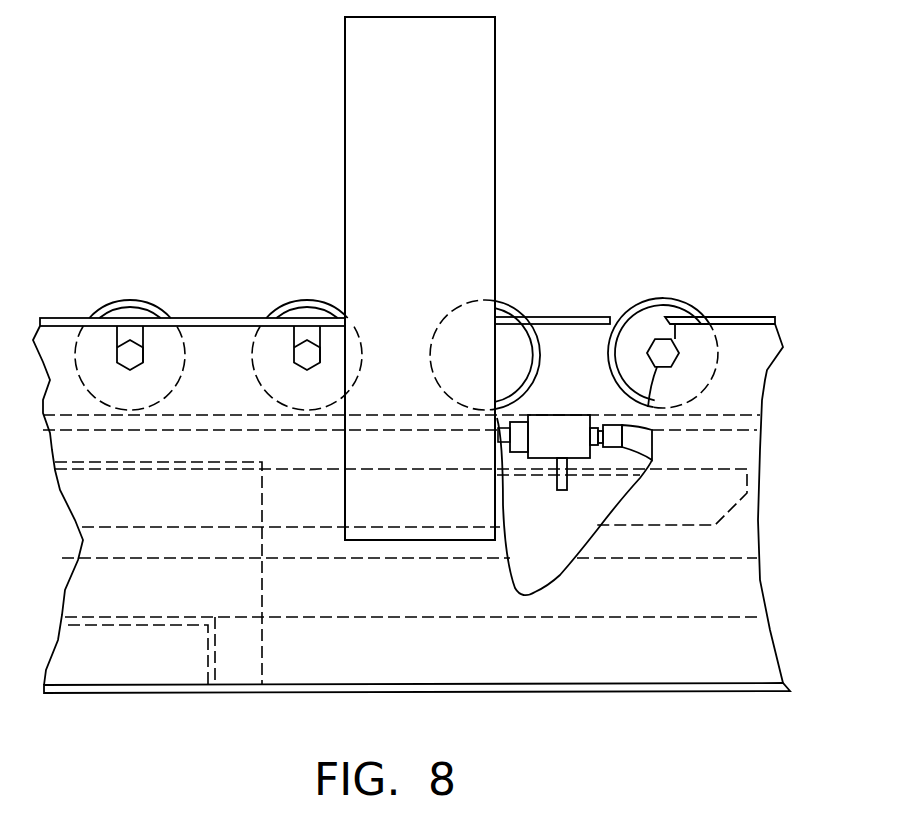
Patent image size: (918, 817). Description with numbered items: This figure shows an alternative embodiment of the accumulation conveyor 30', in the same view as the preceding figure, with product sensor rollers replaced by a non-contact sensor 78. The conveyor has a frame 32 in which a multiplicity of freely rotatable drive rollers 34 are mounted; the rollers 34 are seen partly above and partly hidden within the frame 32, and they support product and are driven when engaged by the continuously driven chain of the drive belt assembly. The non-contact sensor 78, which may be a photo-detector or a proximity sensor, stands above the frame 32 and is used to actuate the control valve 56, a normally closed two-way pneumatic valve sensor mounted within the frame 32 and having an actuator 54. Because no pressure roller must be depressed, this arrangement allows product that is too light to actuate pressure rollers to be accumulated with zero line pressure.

The accumulation conveyor 30' is at (401, 268).
The frame 32 is at (767, 390).
The drive rollers 34 is at (300, 302).
The actuator 54 is at (503, 446).
The pneumatic valve sensor 56 is at (552, 413).
The non-contact sensor 78 is at (495, 258).